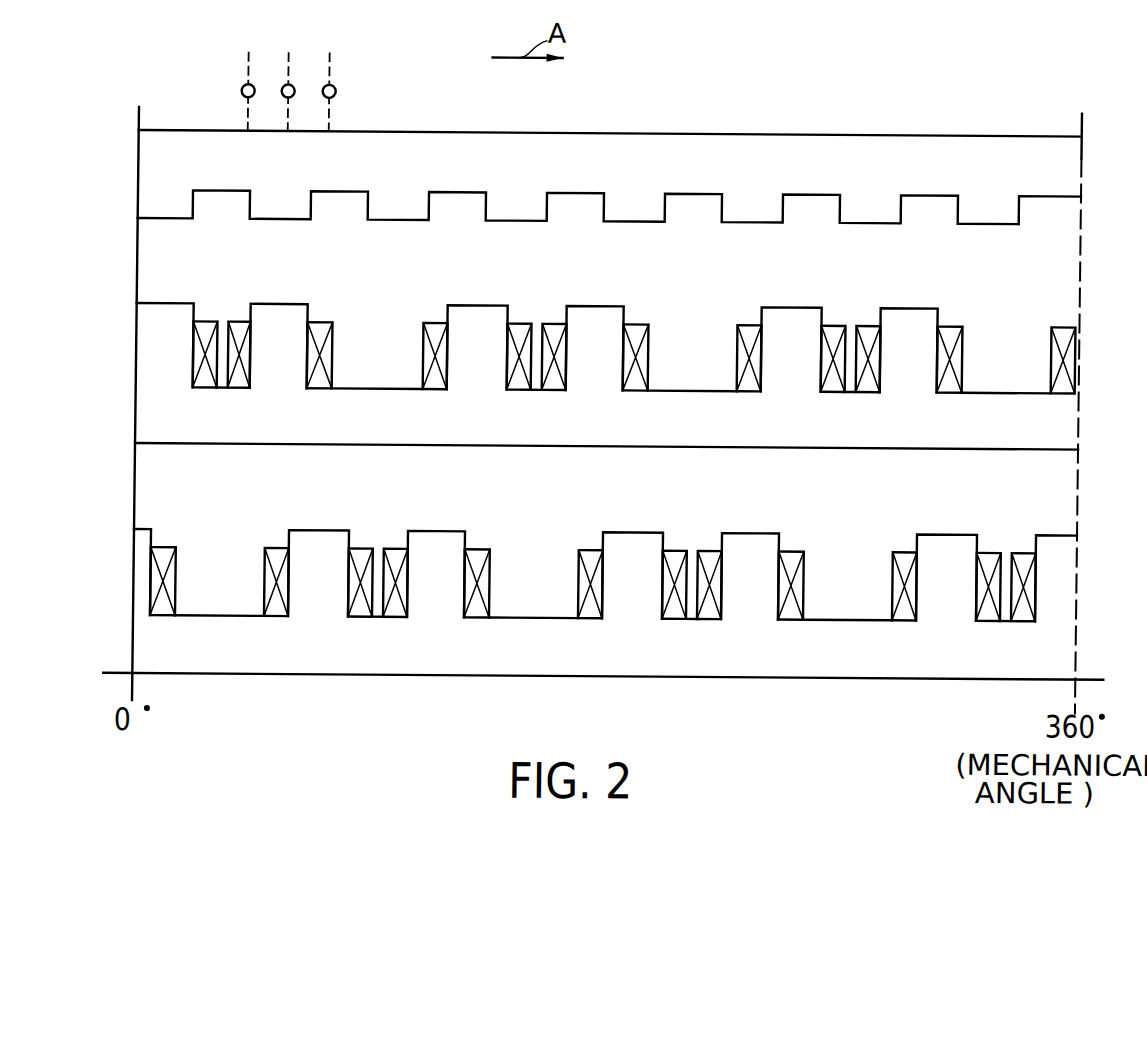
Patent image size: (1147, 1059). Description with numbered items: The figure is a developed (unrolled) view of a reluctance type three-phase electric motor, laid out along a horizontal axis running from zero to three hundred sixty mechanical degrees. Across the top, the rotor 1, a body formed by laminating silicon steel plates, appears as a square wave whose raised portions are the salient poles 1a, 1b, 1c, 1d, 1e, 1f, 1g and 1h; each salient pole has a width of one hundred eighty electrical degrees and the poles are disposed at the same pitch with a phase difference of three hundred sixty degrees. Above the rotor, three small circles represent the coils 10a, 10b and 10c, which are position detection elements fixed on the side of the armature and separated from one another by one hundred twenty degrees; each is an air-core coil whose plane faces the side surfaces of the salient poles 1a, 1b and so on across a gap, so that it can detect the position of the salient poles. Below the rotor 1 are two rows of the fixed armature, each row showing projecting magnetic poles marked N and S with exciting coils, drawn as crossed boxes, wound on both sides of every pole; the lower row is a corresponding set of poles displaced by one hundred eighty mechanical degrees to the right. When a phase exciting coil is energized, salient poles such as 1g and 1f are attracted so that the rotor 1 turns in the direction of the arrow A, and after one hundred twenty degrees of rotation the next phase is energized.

The rotor 1 is at (1069, 152).
The salient pole 1a is at (163, 218).
The salient pole 1b is at (273, 218).
The salient pole 1c is at (388, 218).
The salient pole 1d is at (515, 218).
The salient pole 1e is at (626, 218).
The salient pole 1f is at (743, 218).
The salient pole 1g is at (863, 218).
The salient pole 1h is at (981, 218).
The coil 10a is at (241, 90).
The coil 10b is at (284, 84).
The coil 10c is at (336, 90).